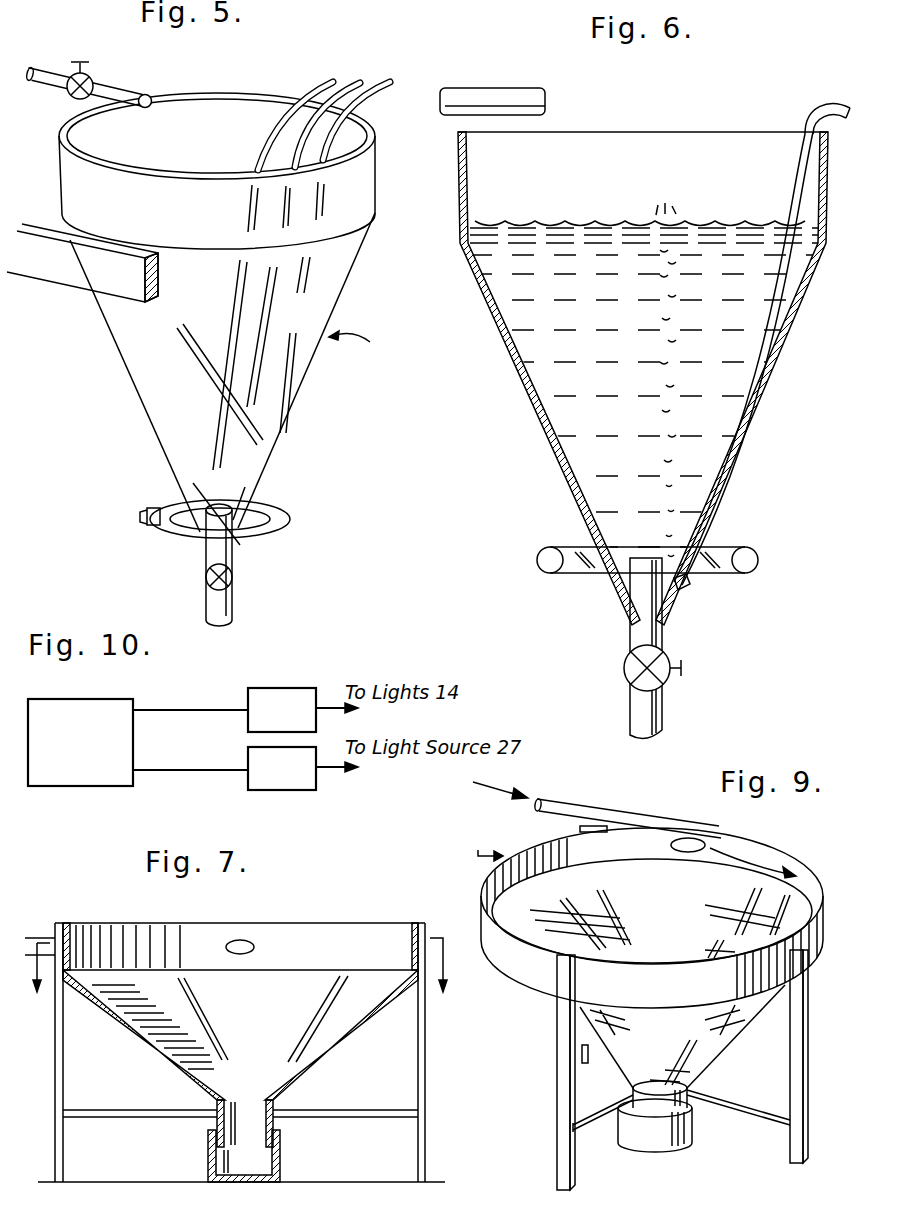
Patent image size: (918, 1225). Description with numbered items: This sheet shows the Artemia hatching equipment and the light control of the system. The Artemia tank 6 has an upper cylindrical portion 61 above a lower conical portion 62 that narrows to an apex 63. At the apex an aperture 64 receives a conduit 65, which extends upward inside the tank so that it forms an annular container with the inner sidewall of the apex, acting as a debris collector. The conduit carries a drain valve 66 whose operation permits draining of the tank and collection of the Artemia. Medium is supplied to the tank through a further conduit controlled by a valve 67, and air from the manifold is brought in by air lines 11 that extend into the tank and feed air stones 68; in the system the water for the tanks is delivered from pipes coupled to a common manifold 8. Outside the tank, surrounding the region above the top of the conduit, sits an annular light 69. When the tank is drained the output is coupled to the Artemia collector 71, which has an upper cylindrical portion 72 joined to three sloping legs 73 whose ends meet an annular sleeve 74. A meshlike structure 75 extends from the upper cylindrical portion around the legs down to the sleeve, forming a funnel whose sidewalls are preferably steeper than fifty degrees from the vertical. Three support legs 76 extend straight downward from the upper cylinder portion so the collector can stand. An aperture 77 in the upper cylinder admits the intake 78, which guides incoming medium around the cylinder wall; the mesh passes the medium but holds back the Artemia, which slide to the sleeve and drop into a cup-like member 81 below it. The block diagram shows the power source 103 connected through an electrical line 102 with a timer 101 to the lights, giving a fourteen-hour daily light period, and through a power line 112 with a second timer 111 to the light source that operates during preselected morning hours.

In FIG. 5, the Artemia tank 6 is at (349, 350).
In FIG. 5, the upper cylindrical portion 61 is at (360, 182).
In FIG. 5, the lower conical portion 62 is at (292, 398).
In FIG. 6, the lower conical portion 62 is at (738, 472).
In FIG. 5, the apex 63 is at (238, 527).
In FIG. 5, the conduit 65 is at (206, 560).
In FIG. 6, the conduit 65 is at (663, 700).
In FIG. 5, the drain valve 66 is at (146, 94).
In FIG. 5, the valve 67 is at (92, 78).
In FIG. 5, the annular light 69 is at (290, 510).
In FIG. 6, the air lines 11 is at (760, 407).
In FIG. 6, the air stones 68 is at (692, 583).
In FIG. 6, the aperture 64 is at (668, 630).
In FIG. 10, the timer 101 is at (303, 688).
In FIG. 10, the electrical line 102 is at (205, 702).
In FIG. 10, the power source 103 is at (97, 783).
In FIG. 10, the timer 111 is at (275, 792).
In FIG. 10, the power line 112 is at (185, 773).
In FIG. 7, the aperture 77 is at (243, 940).
In FIG. 9, the aperture 77 is at (690, 838).
In FIG. 7, the sloping legs 73 is at (367, 1030).
In FIG. 9, the sloping legs 73 is at (733, 1040).
In FIG. 7, the meshlike structure 75 is at (325, 1065).
In FIG. 9, the meshlike structure 75 is at (557, 1045).
In FIG. 7, the annular sleeve 74 is at (275, 1125).
In FIG. 9, the annular sleeve 74 is at (690, 1088).
In FIG. 7, the cup-like member 81 is at (280, 1160).
In FIG. 9, the cup-like member 81 is at (695, 1130).
In FIG. 7, the common manifold 8 is at (237, 978).
In FIG. 9, the intake 78 is at (589, 808).
In FIG. 9, the Artemia collector 71 is at (488, 845).
In FIG. 9, the upper cylindrical portion 72 is at (812, 870).
In FIG. 9, the support legs 76 is at (808, 1007).